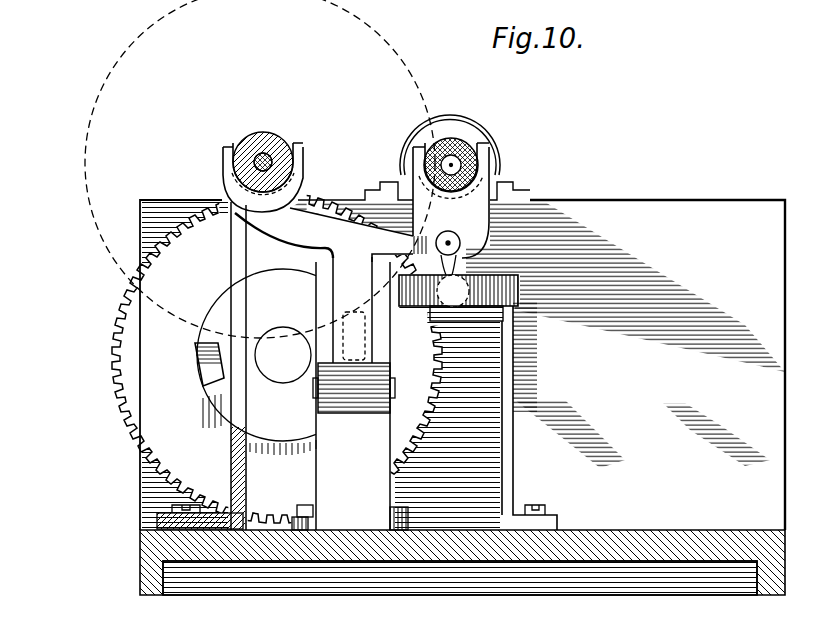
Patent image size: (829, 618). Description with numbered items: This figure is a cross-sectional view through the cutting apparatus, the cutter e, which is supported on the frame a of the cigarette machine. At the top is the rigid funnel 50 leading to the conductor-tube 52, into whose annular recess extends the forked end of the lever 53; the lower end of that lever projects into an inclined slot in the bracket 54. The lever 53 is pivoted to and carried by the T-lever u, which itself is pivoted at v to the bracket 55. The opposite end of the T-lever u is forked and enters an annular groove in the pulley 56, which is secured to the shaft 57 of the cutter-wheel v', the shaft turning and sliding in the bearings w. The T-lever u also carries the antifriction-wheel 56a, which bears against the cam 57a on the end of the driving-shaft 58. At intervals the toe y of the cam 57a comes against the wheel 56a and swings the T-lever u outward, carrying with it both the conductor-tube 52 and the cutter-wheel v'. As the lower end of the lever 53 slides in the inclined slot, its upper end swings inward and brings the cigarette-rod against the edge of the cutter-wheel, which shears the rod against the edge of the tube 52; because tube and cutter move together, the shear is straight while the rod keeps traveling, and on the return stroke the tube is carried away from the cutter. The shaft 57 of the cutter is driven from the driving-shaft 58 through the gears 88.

The funnel 50 is at (456, 123).
The conductor-tube 52 is at (470, 148).
The lever 53 is at (483, 170).
The bracket 54 is at (507, 327).
The bracket 55 is at (350, 393).
The pulley 56 is at (257, 142).
The antifriction-wheel 56a is at (372, 337).
The shaft 57 is at (276, 148).
The cam 57a is at (218, 402).
The driving-shaft 58 is at (283, 362).
The gears 88 is at (118, 373).
The frame a is at (674, 537).
The cutter e is at (79, 274).
The T-lever u is at (324, 242).
The pivot v is at (361, 388).
The cutter-wheel v' is at (249, 169).
The bearings w is at (229, 268).
The toe y is at (205, 352).